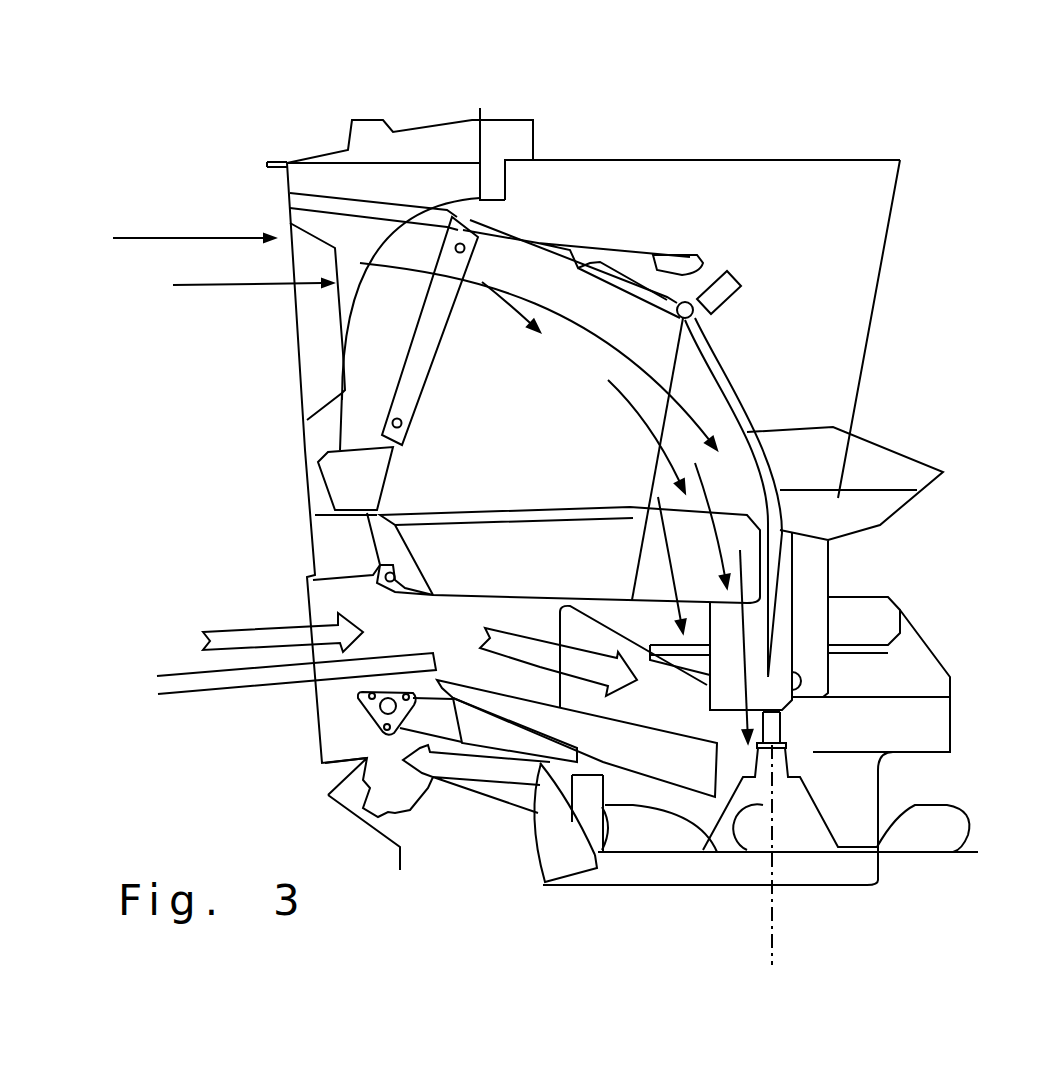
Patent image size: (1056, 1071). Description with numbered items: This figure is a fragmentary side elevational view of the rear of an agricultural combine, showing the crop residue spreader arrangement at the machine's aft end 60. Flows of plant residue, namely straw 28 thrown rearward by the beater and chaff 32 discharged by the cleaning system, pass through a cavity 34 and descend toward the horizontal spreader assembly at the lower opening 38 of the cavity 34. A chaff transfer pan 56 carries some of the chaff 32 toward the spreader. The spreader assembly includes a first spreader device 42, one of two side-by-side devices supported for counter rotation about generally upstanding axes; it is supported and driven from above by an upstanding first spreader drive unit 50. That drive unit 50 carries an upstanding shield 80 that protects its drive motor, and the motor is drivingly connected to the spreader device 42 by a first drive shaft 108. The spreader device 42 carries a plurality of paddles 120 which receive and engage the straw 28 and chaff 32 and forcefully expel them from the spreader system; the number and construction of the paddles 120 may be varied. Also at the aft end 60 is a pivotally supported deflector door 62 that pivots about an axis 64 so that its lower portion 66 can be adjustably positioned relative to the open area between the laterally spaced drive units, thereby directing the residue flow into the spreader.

The straw 28 is at (582, 378).
The chaff 32 is at (273, 627).
The cavity 34 is at (470, 363).
The lower opening 38 is at (700, 795).
The first spreader device 42 is at (907, 853).
The first spreader drive unit 50 is at (842, 555).
The chaff transfer pan 56 is at (566, 812).
The aft end 60 is at (842, 308).
The deflector door 62 is at (730, 370).
The axis 64 is at (727, 271).
The lower portion 66 is at (778, 587).
The upstanding shield 80 is at (807, 682).
The first drive shaft 108 is at (782, 730).
The paddles 120 is at (933, 822).